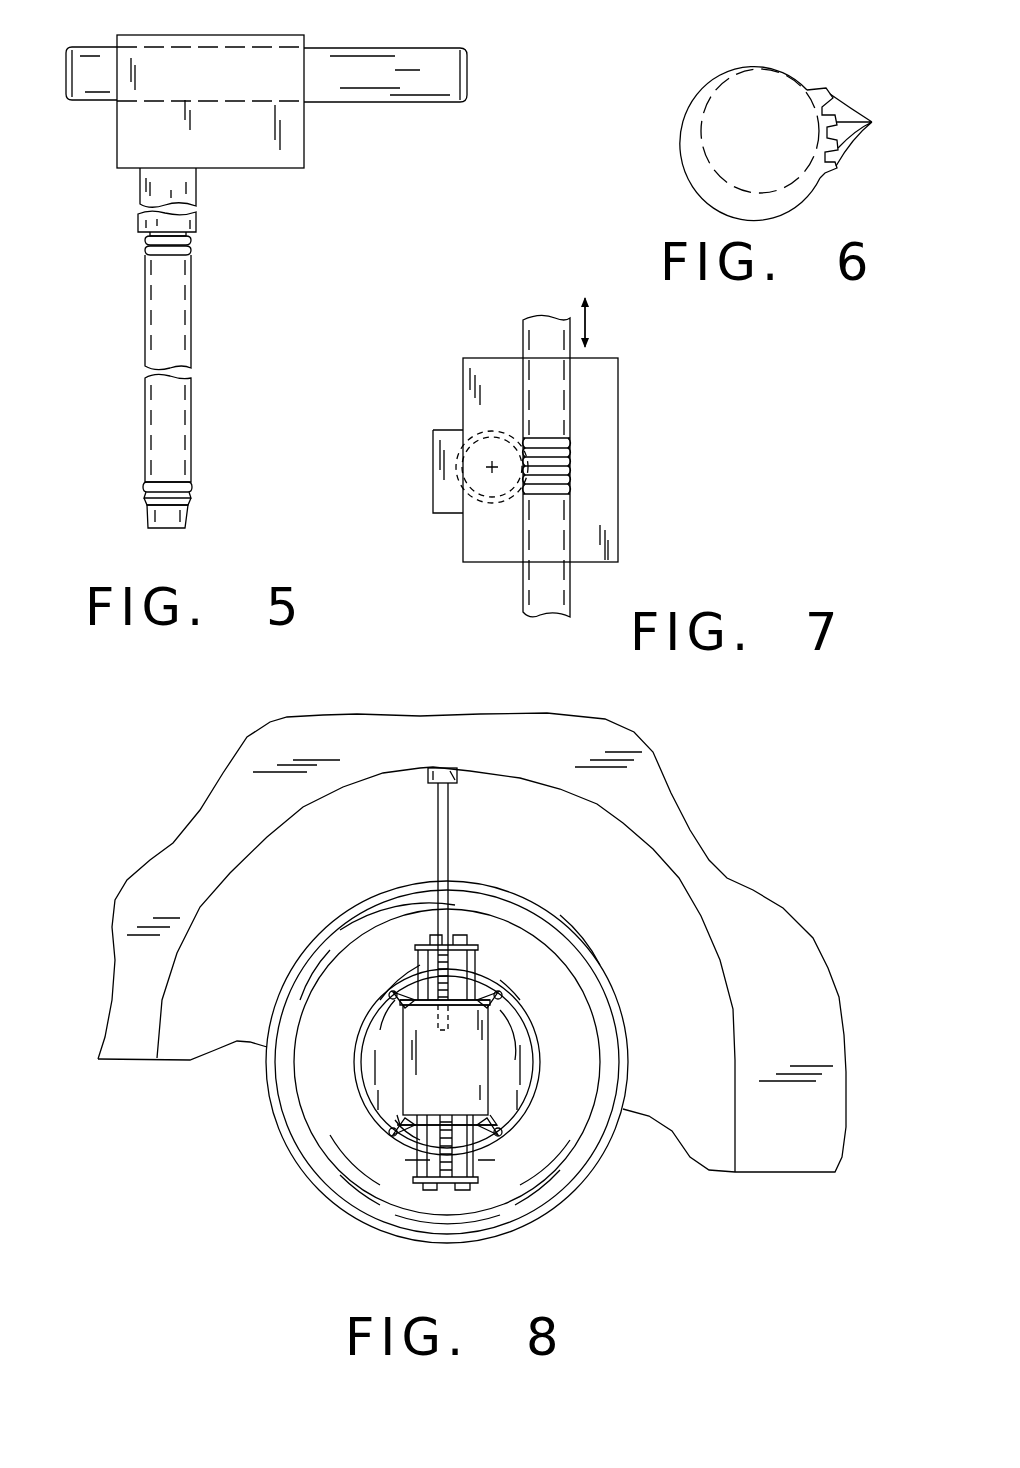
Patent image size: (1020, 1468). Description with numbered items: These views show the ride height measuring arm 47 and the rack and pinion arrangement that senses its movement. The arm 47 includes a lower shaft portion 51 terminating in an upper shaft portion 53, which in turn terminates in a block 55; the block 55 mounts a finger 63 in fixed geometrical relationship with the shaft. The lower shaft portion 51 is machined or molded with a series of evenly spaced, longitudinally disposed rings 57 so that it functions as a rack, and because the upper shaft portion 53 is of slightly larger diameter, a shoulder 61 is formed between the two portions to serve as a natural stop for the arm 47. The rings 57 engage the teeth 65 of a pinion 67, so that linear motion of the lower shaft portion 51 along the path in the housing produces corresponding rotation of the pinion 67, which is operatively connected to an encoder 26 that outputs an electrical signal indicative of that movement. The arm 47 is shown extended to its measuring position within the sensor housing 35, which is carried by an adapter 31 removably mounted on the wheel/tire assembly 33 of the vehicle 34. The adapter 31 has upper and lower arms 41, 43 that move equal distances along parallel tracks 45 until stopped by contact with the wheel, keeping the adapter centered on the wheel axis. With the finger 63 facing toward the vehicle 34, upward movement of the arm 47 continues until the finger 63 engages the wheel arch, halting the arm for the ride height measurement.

In FIG. 7, the encoder 26 is at (440, 490).
In FIG. 8, the adapter 31 is at (504, 973).
In FIG. 8, the wheel/tire assembly 33 is at (587, 1177).
In FIG. 8, the vehicle 34 is at (453, 756).
In FIG. 8, the sensor housing 35 is at (481, 1070).
In FIG. 8, the upper arm 41 is at (505, 1020).
In FIG. 8, the lower arm 43 is at (520, 1100).
In FIG. 8, the parallel tracks 45 is at (410, 1160).
In FIG. 5, the arm 47 is at (105, 194).
In FIG. 8, the arm 47 is at (448, 848).
In FIG. 5, the lower shaft portion 51 is at (198, 332).
In FIG. 7, the lower shaft portion 51 is at (578, 410).
In FIG. 5, the upper shaft portion 53 is at (196, 222).
In FIG. 5, the block 55 is at (236, 89).
In FIG. 8, the block 55 is at (457, 778).
In FIG. 5, the rings 57 is at (192, 251).
In FIG. 7, the rings 57 is at (570, 443).
In FIG. 5, the shoulder 61 is at (145, 234).
In FIG. 5, the finger 63 is at (360, 103).
In FIG. 6, the teeth 65 is at (872, 123).
In FIG. 6, the pinion 67 is at (777, 142).
In FIG. 7, the pinion 67 is at (492, 485).